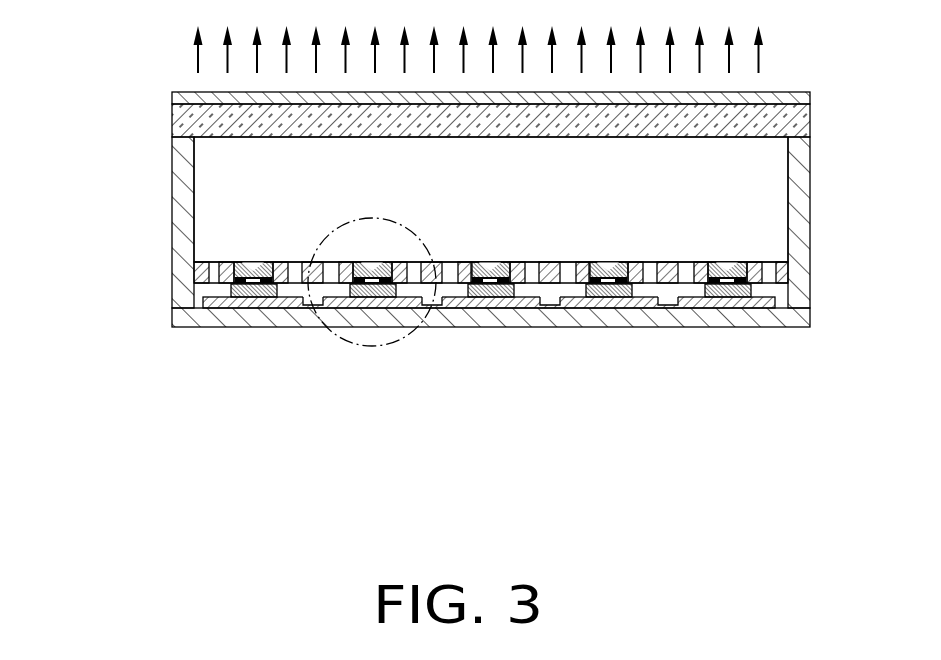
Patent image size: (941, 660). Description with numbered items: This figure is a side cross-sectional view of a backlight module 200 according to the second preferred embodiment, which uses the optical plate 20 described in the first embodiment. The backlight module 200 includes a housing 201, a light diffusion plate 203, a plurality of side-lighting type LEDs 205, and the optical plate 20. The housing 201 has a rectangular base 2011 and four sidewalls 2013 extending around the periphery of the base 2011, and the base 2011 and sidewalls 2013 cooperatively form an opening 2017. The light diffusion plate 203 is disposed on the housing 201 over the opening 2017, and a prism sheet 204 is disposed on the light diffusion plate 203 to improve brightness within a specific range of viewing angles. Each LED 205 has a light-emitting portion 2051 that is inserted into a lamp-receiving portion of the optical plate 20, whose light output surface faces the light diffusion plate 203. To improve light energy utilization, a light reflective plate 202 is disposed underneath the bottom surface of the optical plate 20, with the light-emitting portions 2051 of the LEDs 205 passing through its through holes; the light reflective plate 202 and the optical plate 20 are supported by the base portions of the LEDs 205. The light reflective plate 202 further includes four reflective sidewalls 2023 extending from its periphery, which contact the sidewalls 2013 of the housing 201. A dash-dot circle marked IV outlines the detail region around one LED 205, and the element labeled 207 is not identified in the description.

The backlight module 200 is at (147, 55).
The housing 201 is at (454, 249).
The base 2011 is at (230, 317).
The sidewalls 2013 is at (182, 202).
The reflective sidewalls 2023 is at (797, 160).
The opening 2017 is at (768, 188).
The light reflective plate 202 is at (770, 286).
The light diffusion plate 203 is at (801, 122).
The prism sheet 204 is at (773, 97).
The optical plate 20 is at (546, 293).
The side-lighting type LED 205 is at (491, 328).
The light-emitting portion 2051 is at (450, 278).
The light emitting diode 207 is at (488, 262).
The detail region IV is at (345, 338).